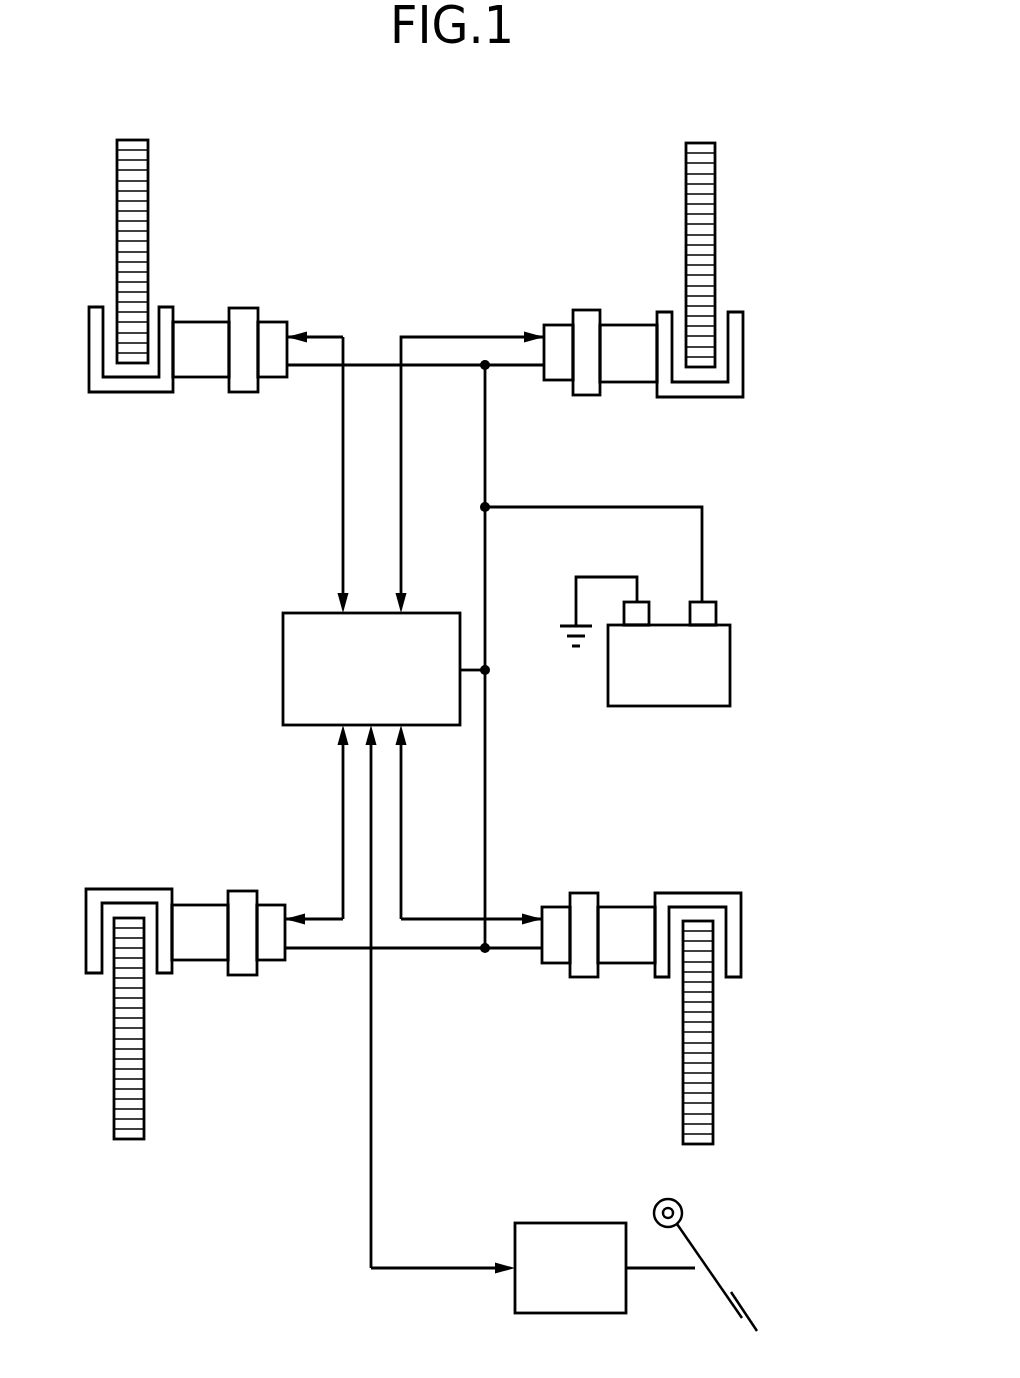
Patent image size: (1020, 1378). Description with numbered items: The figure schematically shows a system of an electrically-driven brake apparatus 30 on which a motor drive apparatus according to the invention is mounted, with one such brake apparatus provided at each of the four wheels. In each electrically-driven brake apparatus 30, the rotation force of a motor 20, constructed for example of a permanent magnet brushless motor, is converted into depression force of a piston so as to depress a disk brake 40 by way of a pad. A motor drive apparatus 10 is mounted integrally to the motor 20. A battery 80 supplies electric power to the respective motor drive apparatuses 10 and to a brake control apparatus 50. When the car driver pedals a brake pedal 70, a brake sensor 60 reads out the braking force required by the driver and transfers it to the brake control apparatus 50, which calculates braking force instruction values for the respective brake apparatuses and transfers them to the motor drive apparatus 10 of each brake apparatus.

The motor drive apparatus 10 is at (560, 325).
The motor 20 is at (587, 310).
The electrically-driven brake apparatus 30 is at (630, 325).
The disk brake 40 is at (700, 143).
The brake control apparatus 50 is at (425, 613).
The brake sensor 60 is at (570, 1223).
The brake pedal 70 is at (718, 1296).
The battery 80 is at (730, 663).